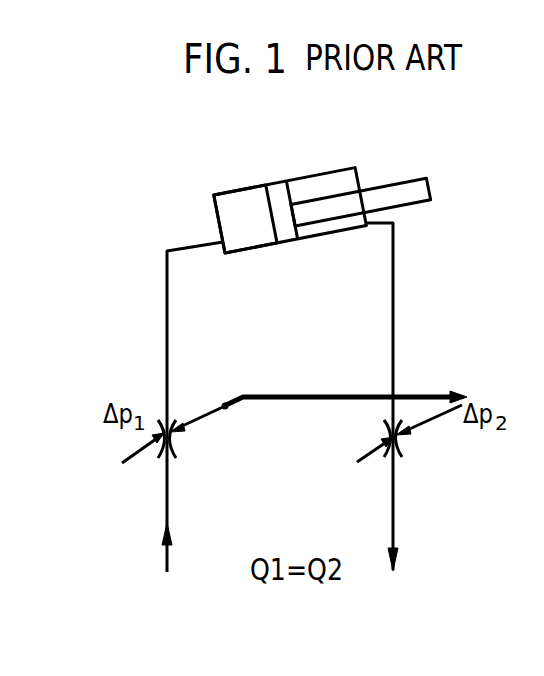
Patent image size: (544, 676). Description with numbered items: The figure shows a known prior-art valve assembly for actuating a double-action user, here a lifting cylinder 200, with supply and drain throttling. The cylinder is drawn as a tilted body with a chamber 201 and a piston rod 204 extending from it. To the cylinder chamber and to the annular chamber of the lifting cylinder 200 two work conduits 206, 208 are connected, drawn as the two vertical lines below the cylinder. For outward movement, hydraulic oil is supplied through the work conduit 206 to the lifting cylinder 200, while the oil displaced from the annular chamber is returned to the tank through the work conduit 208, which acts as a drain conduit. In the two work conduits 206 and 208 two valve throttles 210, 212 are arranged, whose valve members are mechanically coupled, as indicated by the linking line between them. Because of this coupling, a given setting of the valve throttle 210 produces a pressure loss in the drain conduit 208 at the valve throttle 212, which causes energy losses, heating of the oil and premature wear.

The lifting cylinder 200 is at (257, 187).
The cylinder chamber 201 is at (235, 223).
The piston rod 204 is at (343, 180).
The work conduit 206 is at (164, 303).
The work conduit 208 is at (393, 275).
The valve throttle 210 is at (158, 457).
The valve throttle 212 is at (407, 443).